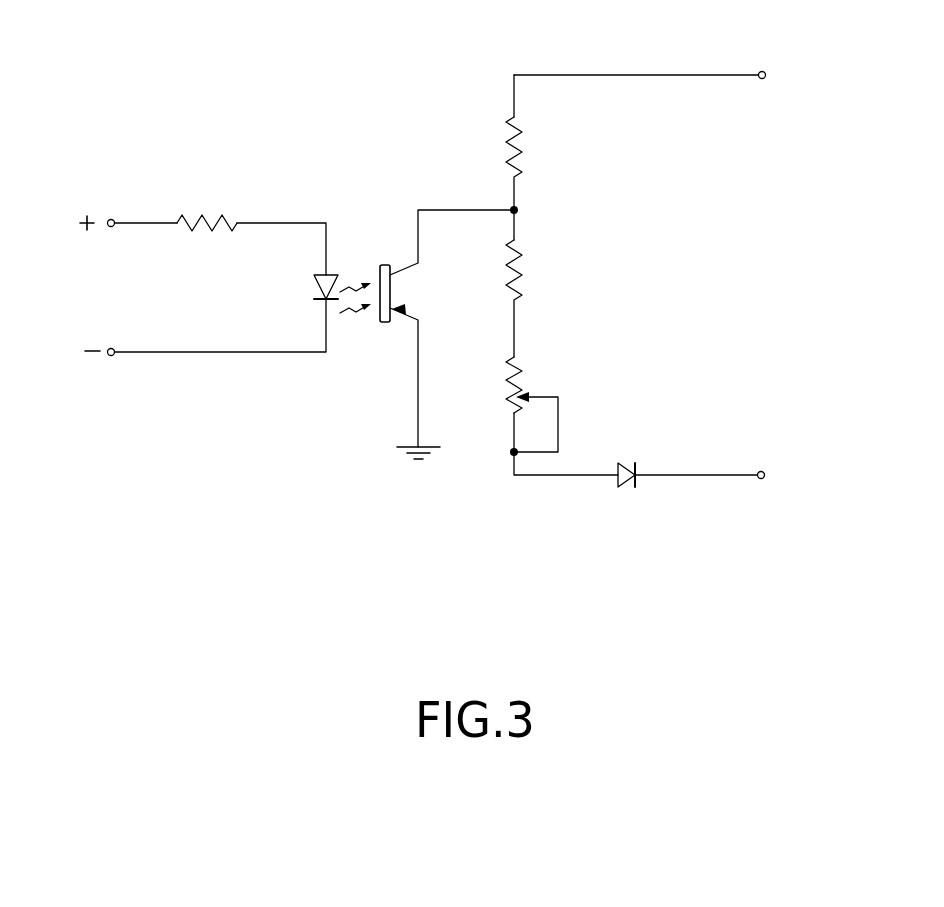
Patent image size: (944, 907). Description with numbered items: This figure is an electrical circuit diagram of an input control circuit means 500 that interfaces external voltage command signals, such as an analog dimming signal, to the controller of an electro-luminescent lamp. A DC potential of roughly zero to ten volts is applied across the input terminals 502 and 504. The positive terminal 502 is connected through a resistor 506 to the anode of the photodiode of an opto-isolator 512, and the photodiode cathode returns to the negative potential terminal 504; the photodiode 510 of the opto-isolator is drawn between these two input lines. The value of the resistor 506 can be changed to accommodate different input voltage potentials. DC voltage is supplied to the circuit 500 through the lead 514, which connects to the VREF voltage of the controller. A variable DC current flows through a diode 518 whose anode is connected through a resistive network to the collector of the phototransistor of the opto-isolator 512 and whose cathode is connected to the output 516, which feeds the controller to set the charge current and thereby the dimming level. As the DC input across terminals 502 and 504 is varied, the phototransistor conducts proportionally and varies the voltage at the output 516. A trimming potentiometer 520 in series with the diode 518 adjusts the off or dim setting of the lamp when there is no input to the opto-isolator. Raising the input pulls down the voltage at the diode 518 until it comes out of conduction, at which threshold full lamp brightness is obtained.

The input control circuit means 500 is at (236, 58).
The input terminal 502 is at (110, 218).
The negative potential terminal 504 is at (110, 357).
The resistor 506 is at (192, 238).
The light emitting diode 510 is at (293, 221).
The opto-isolator 512 is at (369, 178).
The lead 514 is at (766, 71).
The output 516 is at (764, 480).
The diode 518 is at (622, 484).
The trimming potentiometer 520 is at (517, 376).